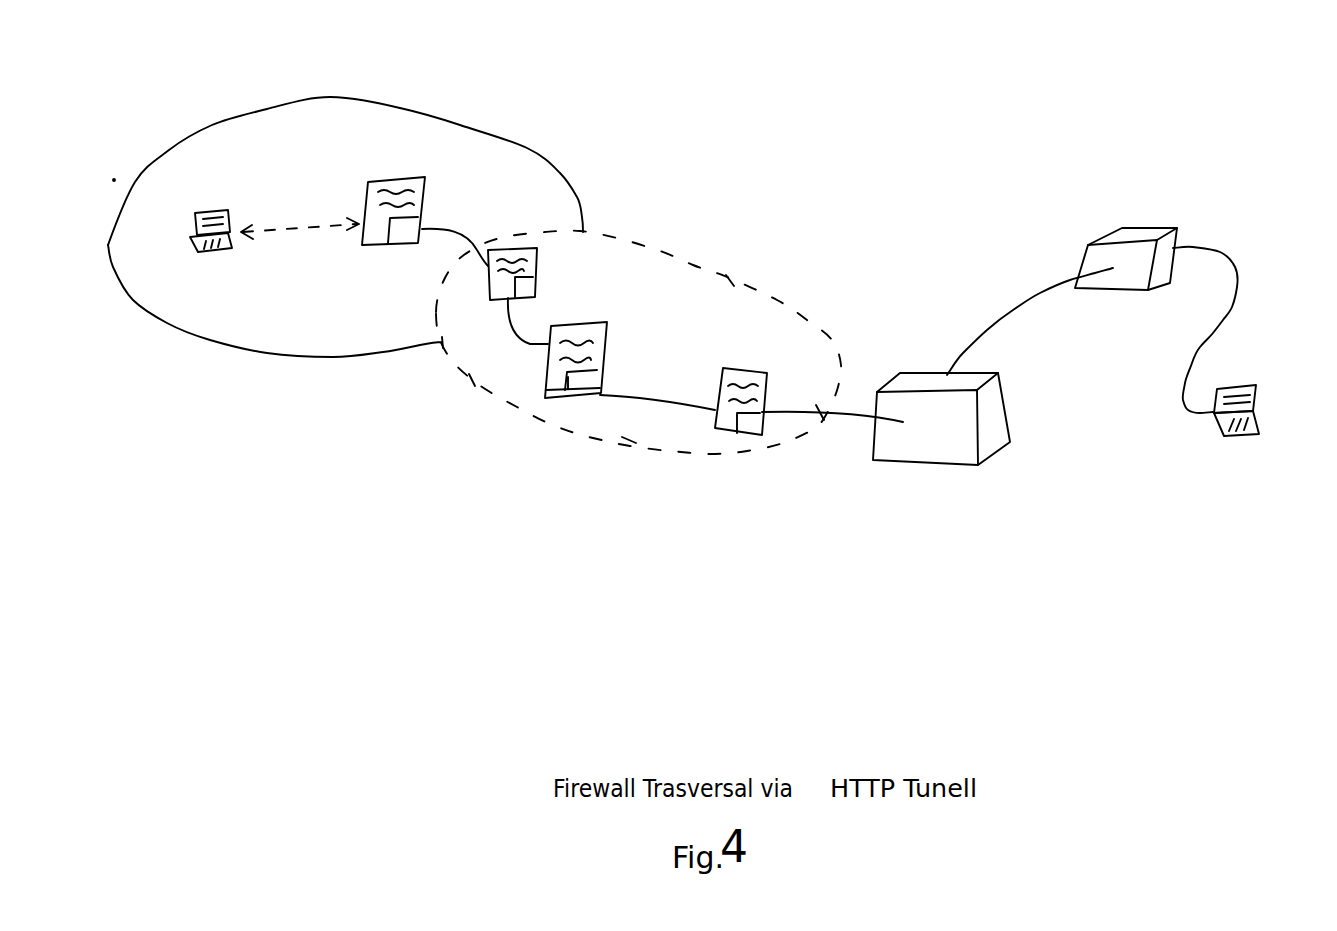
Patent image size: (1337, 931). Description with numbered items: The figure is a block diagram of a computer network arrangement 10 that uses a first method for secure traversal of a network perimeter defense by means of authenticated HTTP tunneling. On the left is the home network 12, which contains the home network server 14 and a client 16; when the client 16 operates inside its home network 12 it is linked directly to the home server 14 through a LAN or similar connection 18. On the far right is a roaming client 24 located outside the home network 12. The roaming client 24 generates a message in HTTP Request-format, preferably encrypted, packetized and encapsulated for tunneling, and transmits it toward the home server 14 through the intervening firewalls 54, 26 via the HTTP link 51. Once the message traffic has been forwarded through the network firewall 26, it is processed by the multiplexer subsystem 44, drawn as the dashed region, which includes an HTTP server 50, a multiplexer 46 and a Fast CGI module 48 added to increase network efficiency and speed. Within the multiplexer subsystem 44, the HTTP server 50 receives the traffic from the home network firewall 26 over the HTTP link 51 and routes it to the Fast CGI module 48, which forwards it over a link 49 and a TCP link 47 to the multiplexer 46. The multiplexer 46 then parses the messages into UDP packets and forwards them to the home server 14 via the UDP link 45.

The network arrangement 10 is at (1027, 78).
The home network 12 is at (453, 122).
The home network server 14 is at (405, 178).
The client 16 is at (232, 212).
The LAN connection 18 is at (287, 223).
The roaming client 24 is at (1256, 404).
The network firewall 26 is at (965, 465).
The multiplexer subsystem 44 is at (674, 239).
The UDP link 45 is at (450, 233).
The multiplexer 46 is at (535, 272).
The TCP link 47 is at (522, 340).
The Fast CGI module 48 is at (607, 342).
The link to third intermediate server 49 is at (639, 397).
The HTTP server 50 is at (750, 368).
The HTTP link 51 is at (838, 415).
The firewall 54 is at (1130, 228).